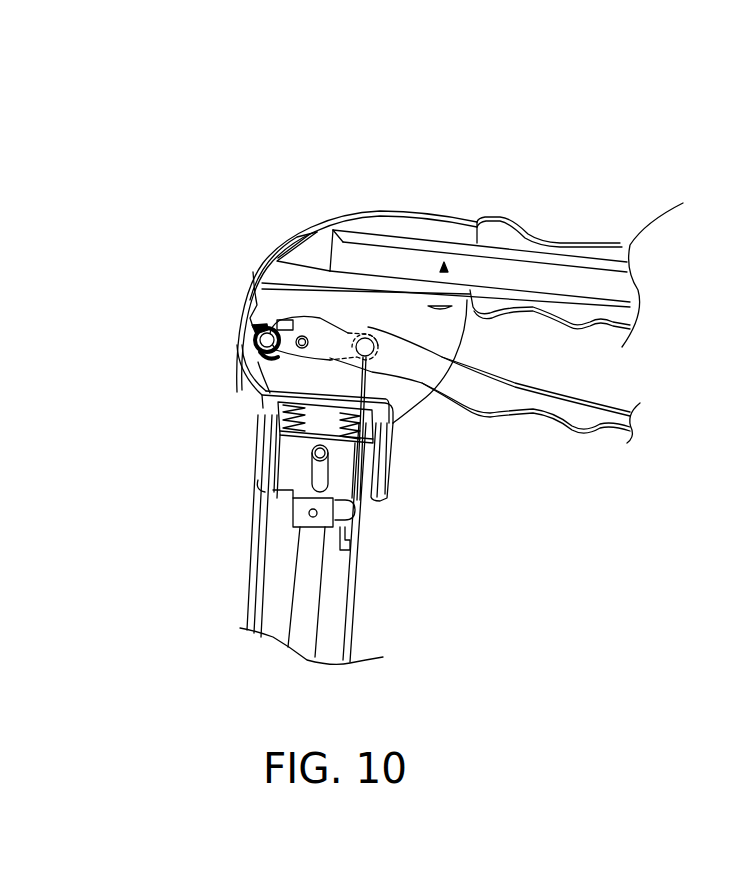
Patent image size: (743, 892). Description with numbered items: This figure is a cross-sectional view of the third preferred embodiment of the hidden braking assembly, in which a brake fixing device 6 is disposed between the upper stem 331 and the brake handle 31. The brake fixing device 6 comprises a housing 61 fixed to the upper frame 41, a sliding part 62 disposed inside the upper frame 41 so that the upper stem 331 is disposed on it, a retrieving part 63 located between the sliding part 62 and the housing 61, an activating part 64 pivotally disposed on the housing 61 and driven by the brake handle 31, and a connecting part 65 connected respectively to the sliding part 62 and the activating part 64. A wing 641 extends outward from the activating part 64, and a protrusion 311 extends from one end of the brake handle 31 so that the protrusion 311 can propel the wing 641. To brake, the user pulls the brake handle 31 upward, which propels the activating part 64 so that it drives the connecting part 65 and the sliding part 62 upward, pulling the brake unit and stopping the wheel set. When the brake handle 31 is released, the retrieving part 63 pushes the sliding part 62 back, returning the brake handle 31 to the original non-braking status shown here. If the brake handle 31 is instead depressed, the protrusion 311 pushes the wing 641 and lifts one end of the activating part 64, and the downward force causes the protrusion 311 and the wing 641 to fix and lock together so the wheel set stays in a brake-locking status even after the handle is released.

The brake fixing device 6 is at (284, 192).
The housing 61 is at (383, 223).
The wing 641 is at (293, 326).
The activating part 64 is at (260, 330).
The protrusion 311 is at (261, 340).
The connecting part 65 is at (365, 383).
The brake handle 31 is at (543, 398).
The retrieving part 63 is at (272, 408).
The sliding part 62 is at (340, 470).
The upper frame 41 is at (255, 565).
The upper stem 331 is at (305, 583).